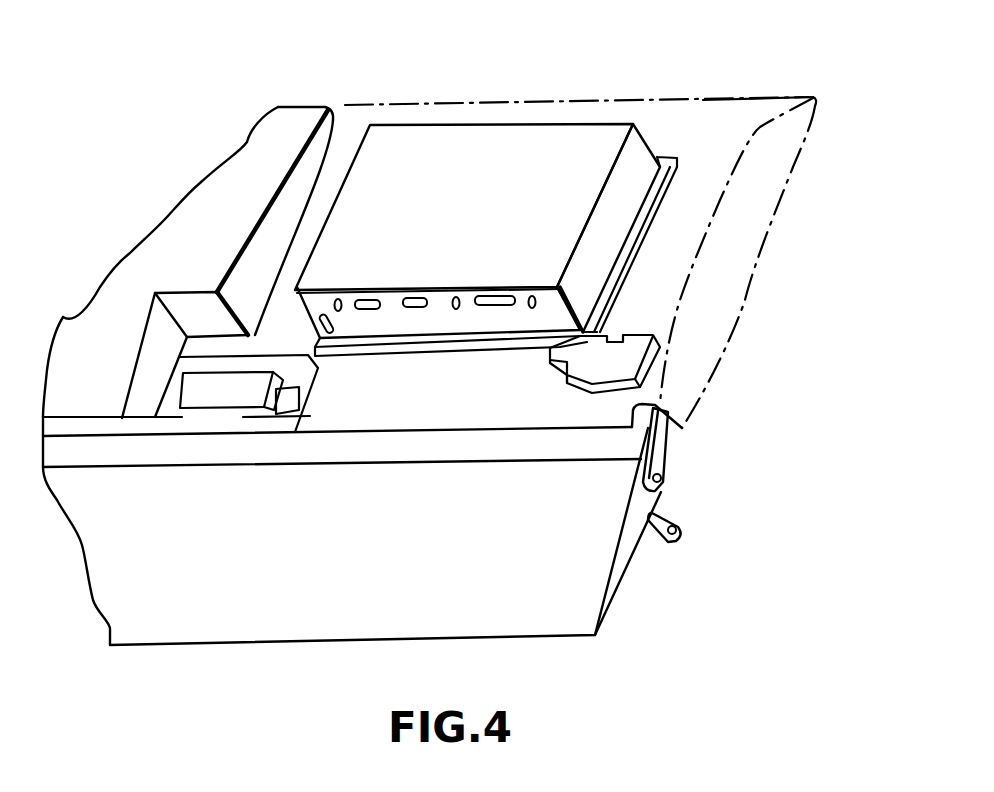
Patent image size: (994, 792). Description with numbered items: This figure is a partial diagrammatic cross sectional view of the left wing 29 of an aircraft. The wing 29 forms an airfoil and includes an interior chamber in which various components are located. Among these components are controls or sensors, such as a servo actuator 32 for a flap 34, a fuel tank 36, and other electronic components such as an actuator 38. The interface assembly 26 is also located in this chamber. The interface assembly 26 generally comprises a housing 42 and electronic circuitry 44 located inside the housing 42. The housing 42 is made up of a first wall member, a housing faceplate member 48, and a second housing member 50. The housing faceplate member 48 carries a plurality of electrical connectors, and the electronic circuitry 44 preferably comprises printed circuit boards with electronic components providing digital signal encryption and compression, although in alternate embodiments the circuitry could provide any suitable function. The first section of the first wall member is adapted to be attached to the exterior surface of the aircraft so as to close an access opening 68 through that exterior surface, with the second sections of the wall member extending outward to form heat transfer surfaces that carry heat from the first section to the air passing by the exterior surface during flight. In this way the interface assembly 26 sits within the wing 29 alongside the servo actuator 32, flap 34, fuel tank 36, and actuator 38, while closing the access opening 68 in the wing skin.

The interface assembly 26 is at (477, 195).
The left wing 29 is at (701, 98).
The servo actuator 32 is at (222, 397).
The flap 34 is at (197, 625).
The fuel tank 36 is at (182, 207).
The actuator 38 is at (623, 365).
The housing 42 is at (385, 137).
The electronic circuitry 44 is at (435, 143).
The housing faceplate member 48 is at (477, 320).
The second housing member 50 is at (567, 137).
The access opening 68 is at (612, 290).